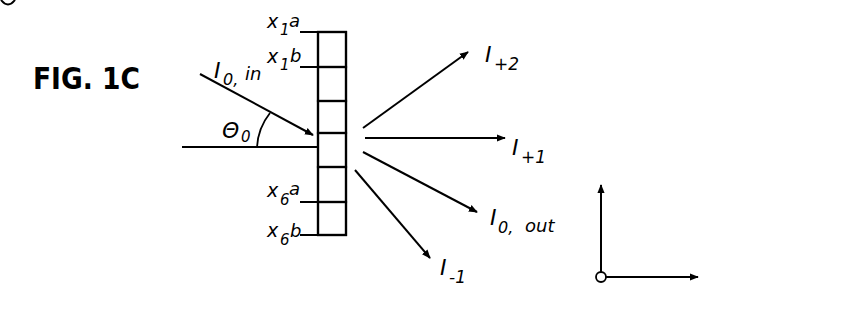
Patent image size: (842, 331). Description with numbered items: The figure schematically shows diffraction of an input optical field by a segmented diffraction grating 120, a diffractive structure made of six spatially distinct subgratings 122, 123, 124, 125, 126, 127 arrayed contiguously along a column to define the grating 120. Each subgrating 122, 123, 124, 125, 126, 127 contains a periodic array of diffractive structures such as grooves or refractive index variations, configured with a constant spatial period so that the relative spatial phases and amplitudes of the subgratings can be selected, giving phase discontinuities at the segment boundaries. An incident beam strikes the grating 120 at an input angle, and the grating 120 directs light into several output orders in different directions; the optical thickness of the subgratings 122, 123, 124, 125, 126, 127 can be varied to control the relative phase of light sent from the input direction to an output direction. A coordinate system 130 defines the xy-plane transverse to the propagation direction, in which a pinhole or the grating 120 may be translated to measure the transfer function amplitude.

The segmented diffraction grating 120 is at (333, 240).
The subgrating 122 is at (347, 37).
The subgrating 123 is at (347, 85).
The subgrating 124 is at (347, 132).
The subgrating 125 is at (347, 153).
The subgrating 126 is at (318, 192).
The subgrating 127 is at (348, 218).
The coordinate system 130 is at (674, 196).